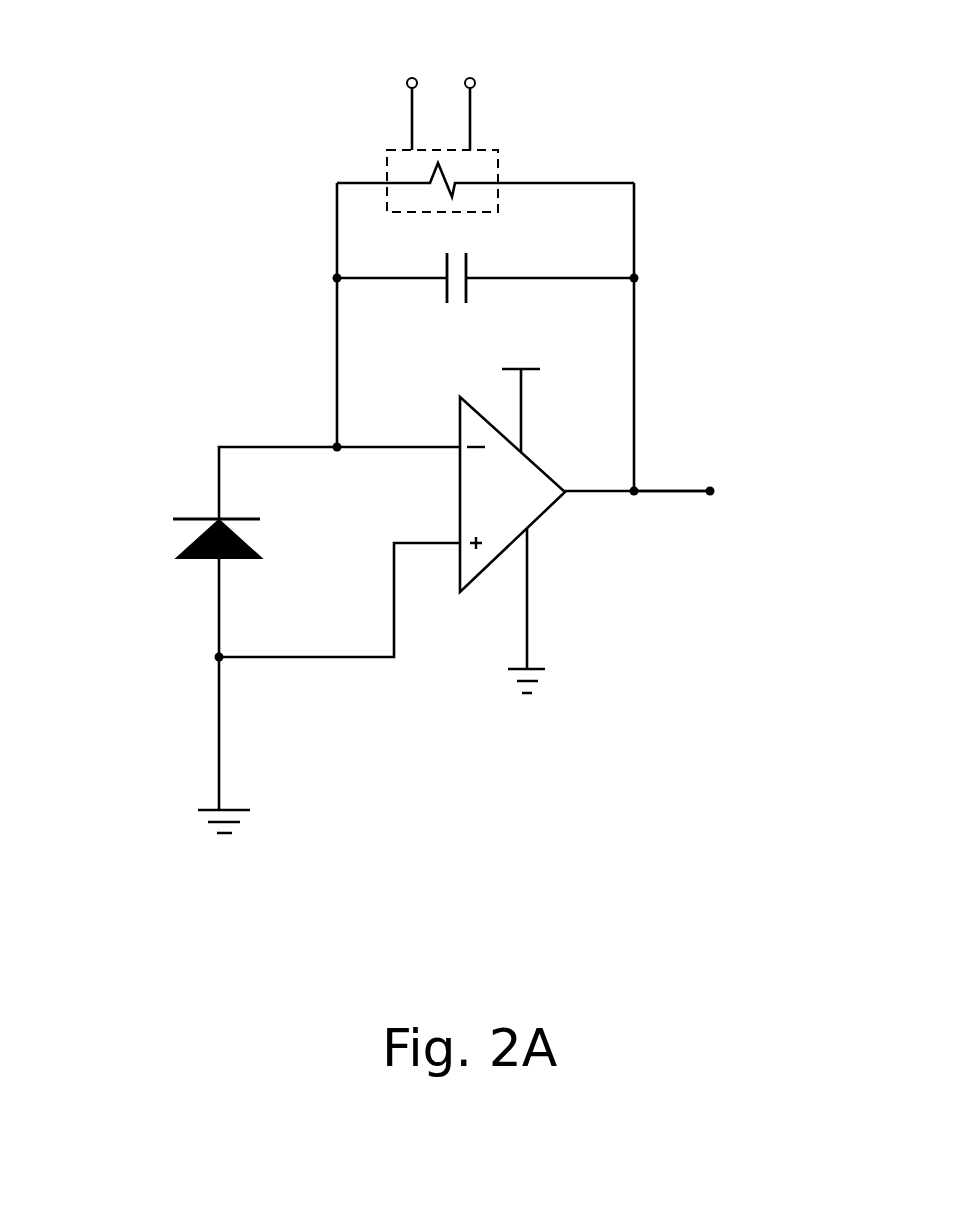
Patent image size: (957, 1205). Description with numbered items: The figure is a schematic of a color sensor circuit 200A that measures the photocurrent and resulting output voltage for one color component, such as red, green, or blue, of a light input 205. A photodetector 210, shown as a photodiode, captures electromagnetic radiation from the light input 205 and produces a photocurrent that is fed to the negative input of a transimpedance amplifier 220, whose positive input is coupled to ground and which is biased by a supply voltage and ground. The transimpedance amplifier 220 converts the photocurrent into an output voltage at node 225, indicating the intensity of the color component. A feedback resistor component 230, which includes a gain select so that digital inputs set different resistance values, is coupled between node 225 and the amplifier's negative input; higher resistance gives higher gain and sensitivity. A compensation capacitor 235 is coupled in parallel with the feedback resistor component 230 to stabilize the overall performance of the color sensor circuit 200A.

The color sensor circuit 200A is at (813, 36).
The light input 205 is at (148, 536).
The photodetector 210 is at (170, 562).
The transimpedance amplifier 220 is at (547, 512).
The node 225 is at (650, 491).
The feedback resistor component 230 is at (498, 170).
The compensation capacitor 235 is at (447, 295).